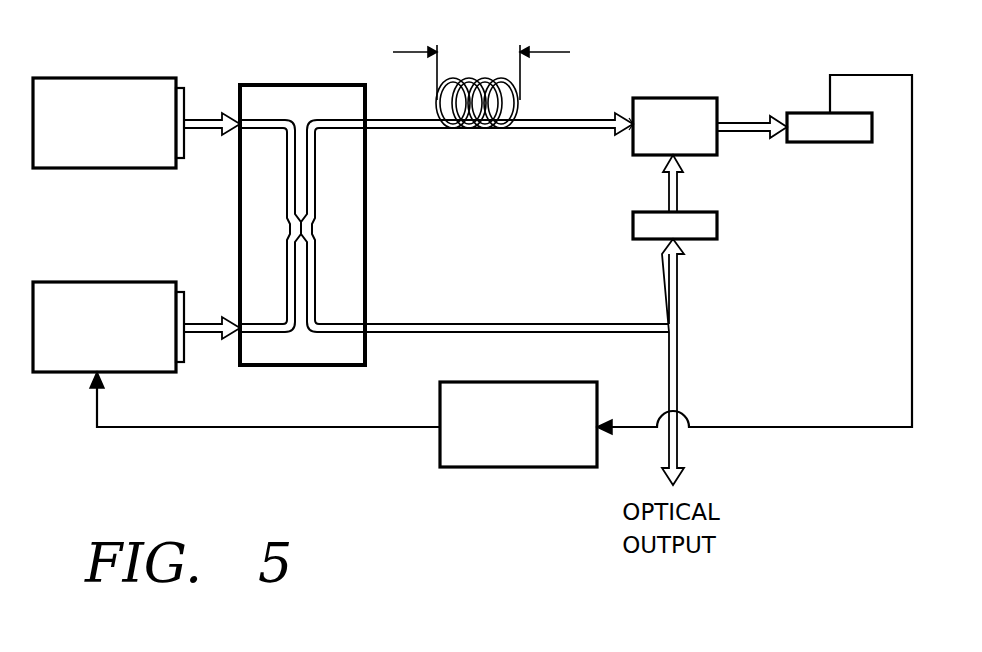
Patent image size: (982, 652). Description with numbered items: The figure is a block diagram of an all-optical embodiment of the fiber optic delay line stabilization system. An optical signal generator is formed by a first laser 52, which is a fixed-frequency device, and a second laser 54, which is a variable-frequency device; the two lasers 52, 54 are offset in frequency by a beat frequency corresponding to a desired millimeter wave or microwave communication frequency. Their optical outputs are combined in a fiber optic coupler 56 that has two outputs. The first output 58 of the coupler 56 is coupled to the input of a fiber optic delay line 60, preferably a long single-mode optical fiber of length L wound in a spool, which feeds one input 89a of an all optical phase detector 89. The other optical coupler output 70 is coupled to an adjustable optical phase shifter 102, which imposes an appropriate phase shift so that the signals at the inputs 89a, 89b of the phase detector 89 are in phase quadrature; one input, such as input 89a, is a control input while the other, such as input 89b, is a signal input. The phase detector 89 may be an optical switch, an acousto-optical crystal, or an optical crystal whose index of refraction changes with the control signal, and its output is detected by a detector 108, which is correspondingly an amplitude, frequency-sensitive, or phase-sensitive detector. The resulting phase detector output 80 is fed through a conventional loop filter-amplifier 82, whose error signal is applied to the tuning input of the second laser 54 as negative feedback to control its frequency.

The first laser 52 is at (47, 82).
The second laser 54 is at (45, 286).
The fiber optic coupler 56 is at (343, 85).
The first output 58 is at (405, 131).
The fiber optic delay line 60 is at (497, 78).
The optical coupler output 70 is at (398, 323).
The phase detector output 80 is at (911, 345).
The loop filter-amplifier 82 is at (467, 460).
The all optical phase detector 89 is at (672, 98).
The phase detector input 89a is at (630, 111).
The phase detector input 89b is at (662, 156).
The adjustable optical phase shifter 102 is at (717, 232).
The detector 108 is at (796, 113).